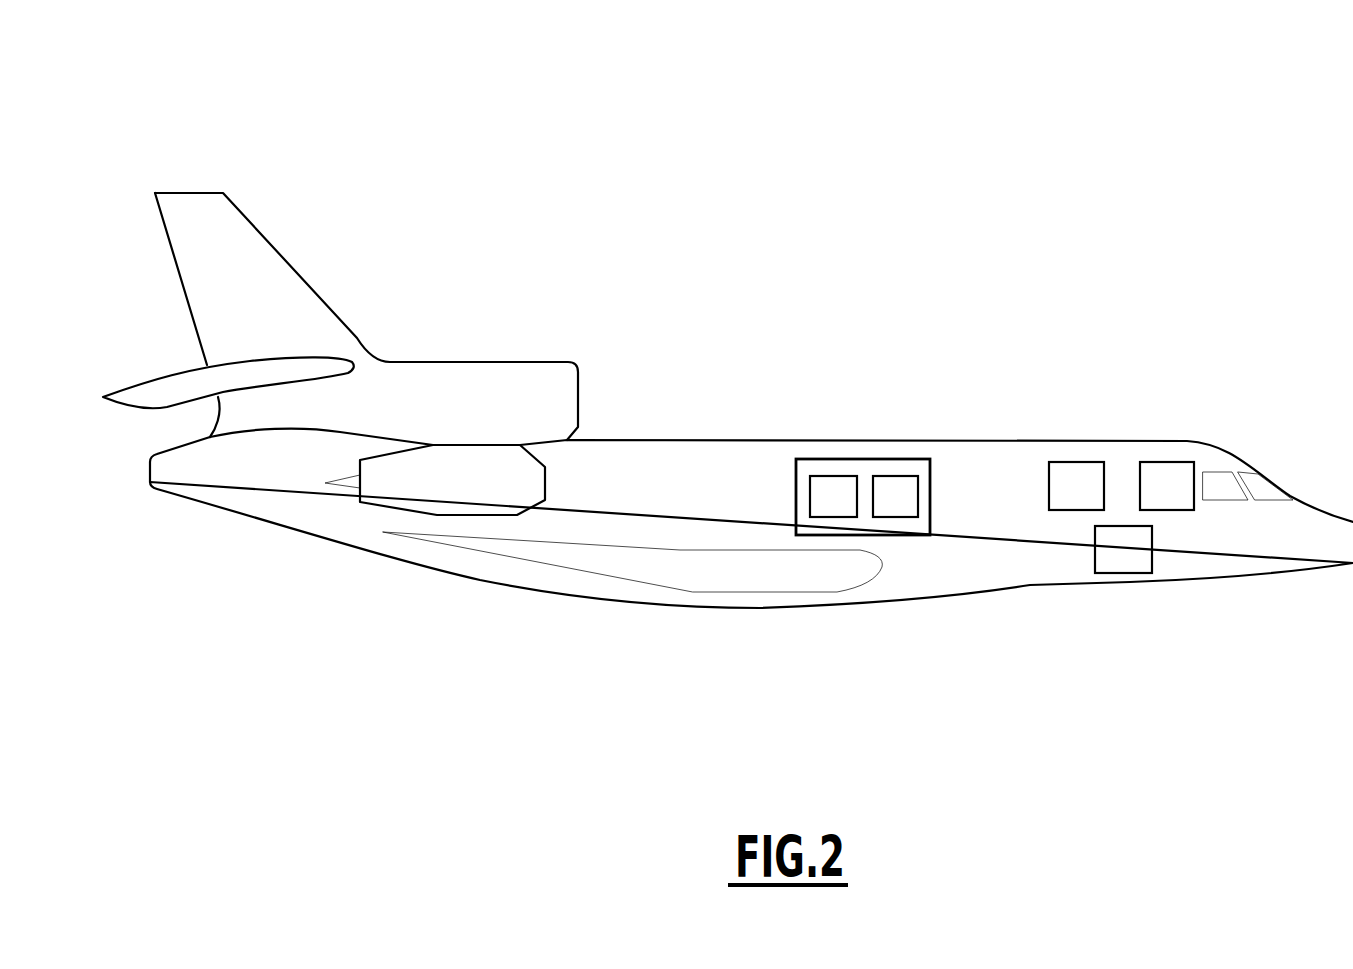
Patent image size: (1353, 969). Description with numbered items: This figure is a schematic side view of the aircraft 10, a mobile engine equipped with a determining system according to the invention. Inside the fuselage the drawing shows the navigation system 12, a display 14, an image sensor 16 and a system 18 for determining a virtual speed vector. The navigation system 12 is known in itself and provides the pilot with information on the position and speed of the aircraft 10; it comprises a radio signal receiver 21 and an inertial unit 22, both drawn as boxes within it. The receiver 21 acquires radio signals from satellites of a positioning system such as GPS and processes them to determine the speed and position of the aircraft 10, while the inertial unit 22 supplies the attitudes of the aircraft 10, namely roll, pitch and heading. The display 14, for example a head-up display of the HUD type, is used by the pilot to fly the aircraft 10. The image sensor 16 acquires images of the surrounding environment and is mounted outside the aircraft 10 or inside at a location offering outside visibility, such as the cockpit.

The aircraft 10 is at (114, 116).
The navigation system 12 is at (863, 459).
The display 14 is at (1167, 486).
The image sensor 16 is at (1076, 486).
The system for determining a virtual speed vector 18 is at (1123, 549).
The radio signal receiver 21 is at (830, 517).
The inertial unit 22 is at (892, 517).